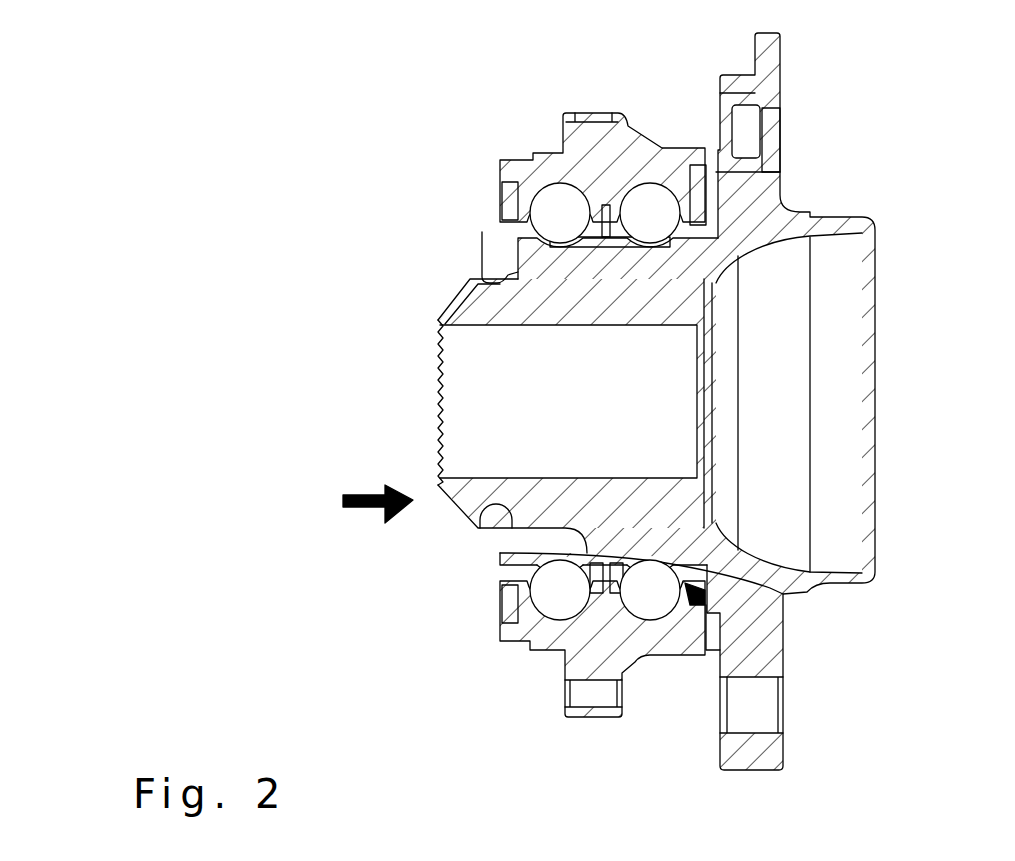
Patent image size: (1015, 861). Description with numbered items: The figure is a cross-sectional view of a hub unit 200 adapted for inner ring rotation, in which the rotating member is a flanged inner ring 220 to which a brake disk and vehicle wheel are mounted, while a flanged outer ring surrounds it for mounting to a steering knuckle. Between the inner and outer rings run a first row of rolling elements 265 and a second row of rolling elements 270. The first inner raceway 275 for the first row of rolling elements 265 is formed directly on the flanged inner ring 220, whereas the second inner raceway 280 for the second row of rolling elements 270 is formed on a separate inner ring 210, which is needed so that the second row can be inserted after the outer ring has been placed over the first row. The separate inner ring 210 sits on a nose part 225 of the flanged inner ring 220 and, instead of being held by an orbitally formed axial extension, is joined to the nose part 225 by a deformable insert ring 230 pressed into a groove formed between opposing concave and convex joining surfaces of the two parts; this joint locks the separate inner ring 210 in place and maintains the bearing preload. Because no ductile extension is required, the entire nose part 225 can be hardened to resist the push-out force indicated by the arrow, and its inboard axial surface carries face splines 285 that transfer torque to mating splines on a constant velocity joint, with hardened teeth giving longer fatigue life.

The hub unit 200 is at (345, 105).
The separate inner ring 210 is at (518, 238).
The flanged inner ring 220 is at (760, 190).
The nose part 225 is at (493, 310).
The deformable insert ring 230 is at (480, 527).
The first row of rolling elements 265 is at (648, 592).
The second row of rolling elements 270 is at (560, 592).
The first inner raceway 275 is at (682, 565).
The second inner raceway 280 is at (528, 563).
The face splines 285 is at (455, 298).